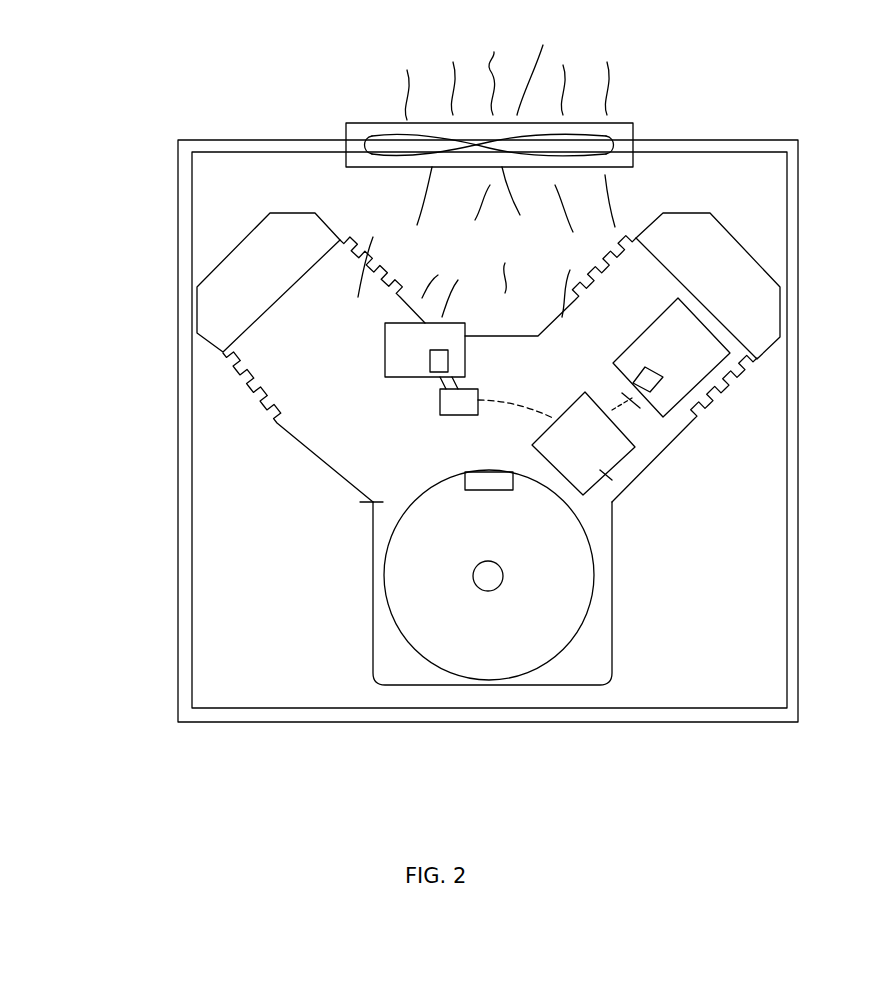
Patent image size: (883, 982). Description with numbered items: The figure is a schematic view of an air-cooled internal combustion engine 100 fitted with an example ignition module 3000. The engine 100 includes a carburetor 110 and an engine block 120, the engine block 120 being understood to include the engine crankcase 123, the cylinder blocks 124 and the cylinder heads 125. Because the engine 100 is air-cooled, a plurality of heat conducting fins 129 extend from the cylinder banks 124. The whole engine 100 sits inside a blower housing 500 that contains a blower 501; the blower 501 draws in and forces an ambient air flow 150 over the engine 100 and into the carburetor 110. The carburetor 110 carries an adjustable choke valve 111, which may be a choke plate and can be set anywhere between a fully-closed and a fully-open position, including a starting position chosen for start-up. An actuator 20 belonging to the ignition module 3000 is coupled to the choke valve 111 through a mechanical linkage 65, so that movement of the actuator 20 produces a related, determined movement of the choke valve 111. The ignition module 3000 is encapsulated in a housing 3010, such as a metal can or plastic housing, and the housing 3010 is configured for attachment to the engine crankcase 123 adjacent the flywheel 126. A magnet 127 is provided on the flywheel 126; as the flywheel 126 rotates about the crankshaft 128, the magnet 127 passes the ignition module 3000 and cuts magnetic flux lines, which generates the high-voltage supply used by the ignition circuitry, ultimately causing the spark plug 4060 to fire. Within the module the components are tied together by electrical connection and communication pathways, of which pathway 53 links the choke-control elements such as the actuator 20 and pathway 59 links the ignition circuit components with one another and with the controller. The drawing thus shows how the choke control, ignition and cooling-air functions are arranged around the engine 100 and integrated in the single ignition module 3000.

The internal combustion engine 100 is at (342, 544).
The carburetor 110 is at (385, 370).
The choke valve 111 is at (447, 350).
The engine block 120 is at (370, 547).
The engine crankcase 123 is at (383, 502).
The cylinder blocks 124 is at (290, 393).
The cylinder heads 125 is at (220, 302).
The flywheel 126 is at (570, 643).
The magnet 127 is at (477, 490).
The crankshaft 128 is at (477, 590).
The heat conducting fins 129 is at (343, 236).
The ambient air flow 150 is at (383, 116).
The actuator 20 is at (457, 415).
The electrical connection/communication pathway 53 is at (493, 403).
The electrical connection/communication pathway 59 is at (622, 393).
The mechanical linkage 65 is at (442, 378).
The blower housing 500 is at (797, 212).
The blower 501 is at (628, 147).
The ignition module 3000 is at (593, 483).
The ignition module housing 3010 is at (610, 465).
The spark plug 4060 is at (657, 372).